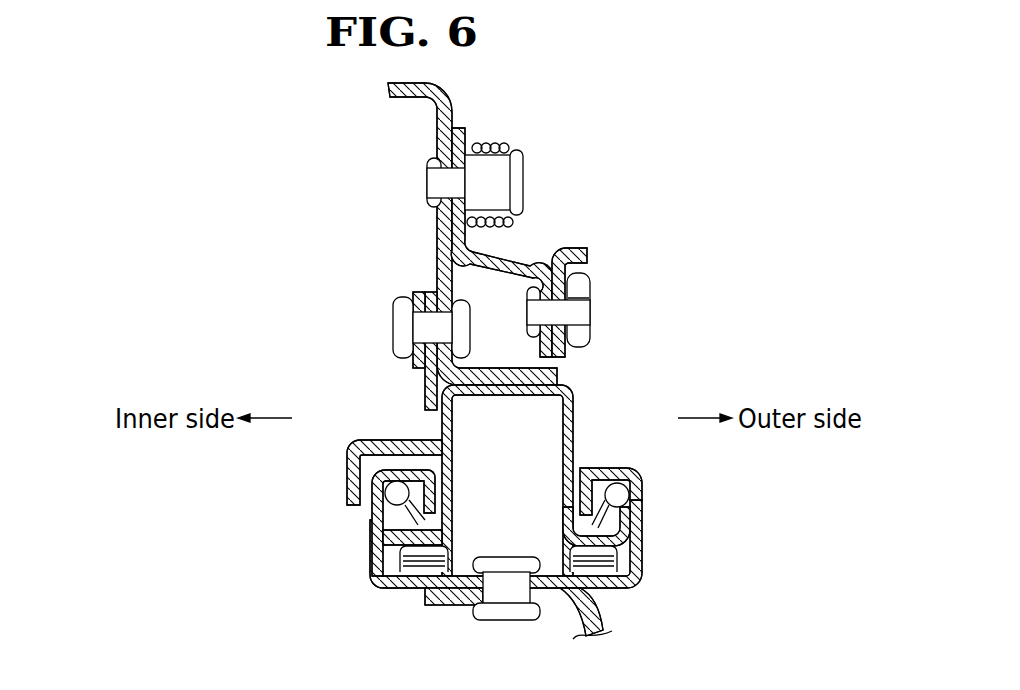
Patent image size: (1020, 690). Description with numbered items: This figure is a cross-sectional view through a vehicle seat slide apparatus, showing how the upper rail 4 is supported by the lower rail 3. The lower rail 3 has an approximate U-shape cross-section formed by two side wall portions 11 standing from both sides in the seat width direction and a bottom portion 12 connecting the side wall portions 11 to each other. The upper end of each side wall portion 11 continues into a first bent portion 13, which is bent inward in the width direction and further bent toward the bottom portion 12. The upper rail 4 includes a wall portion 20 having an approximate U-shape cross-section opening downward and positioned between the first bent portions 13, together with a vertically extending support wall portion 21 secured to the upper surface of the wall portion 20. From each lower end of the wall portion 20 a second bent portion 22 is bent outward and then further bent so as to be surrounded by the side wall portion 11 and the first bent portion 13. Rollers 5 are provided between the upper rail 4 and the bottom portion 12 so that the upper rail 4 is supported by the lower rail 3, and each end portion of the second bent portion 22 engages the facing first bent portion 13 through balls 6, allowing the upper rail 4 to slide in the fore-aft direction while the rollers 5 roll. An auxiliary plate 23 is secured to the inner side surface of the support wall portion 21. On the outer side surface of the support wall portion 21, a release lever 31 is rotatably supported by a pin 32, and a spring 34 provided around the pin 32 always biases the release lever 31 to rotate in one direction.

The lower rail 3 is at (506, 574).
The upper rail 4 is at (530, 465).
The roller 5 is at (418, 578).
The ball 6 is at (372, 480).
The side wall portion 11 is at (373, 563).
The bottom portion 12 is at (447, 603).
The first bent portion 13 is at (381, 445).
The wall portion 20 is at (578, 452).
The support wall portion 21 is at (456, 107).
The second bent portion 22 is at (383, 512).
The auxiliary plate 23 is at (425, 395).
The release lever 31 is at (537, 262).
The pin 32 is at (500, 184).
The spring 34 is at (520, 141).